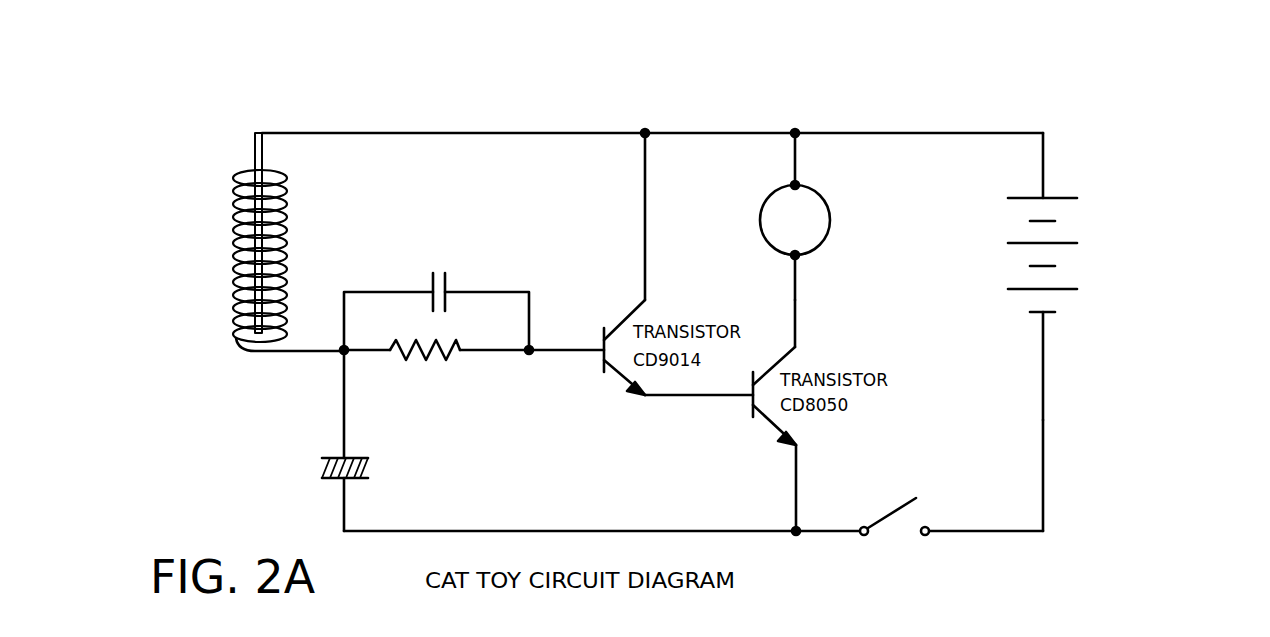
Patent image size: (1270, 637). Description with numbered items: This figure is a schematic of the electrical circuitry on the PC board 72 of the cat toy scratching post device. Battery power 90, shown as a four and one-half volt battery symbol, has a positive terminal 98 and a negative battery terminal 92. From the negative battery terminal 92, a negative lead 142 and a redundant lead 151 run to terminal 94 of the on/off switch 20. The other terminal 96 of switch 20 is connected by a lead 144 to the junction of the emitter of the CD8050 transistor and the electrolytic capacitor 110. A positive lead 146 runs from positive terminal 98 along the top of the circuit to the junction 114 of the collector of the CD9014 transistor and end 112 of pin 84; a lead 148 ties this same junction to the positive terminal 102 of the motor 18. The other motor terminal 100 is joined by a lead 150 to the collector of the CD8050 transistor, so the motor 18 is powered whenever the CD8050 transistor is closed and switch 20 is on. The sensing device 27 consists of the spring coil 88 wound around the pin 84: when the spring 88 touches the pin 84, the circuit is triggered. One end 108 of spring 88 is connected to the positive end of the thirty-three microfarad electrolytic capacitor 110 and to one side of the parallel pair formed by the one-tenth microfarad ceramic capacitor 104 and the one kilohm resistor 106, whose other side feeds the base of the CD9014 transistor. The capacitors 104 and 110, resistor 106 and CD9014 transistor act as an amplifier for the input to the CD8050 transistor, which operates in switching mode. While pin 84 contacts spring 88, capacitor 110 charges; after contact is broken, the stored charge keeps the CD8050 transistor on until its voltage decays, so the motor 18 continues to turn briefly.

The PC board 72 is at (214, 66).
The end of pin 112 is at (276, 213).
The pin 84 is at (263, 143).
The device 27 is at (240, 256).
The spring 88 is at (288, 223).
The end of spring 108 is at (262, 352).
The ceramic capacitor 104 is at (447, 300).
The resistor 106 is at (455, 352).
The electrolytic capacitor 110 is at (368, 470).
The lead 148 is at (670, 133).
The junction 114 is at (727, 133).
The positive lead 146 is at (927, 133).
The positive terminal of motor 102 is at (798, 184).
The motor 18 is at (822, 216).
The terminal of motor 100 is at (798, 257).
The lead 150 is at (797, 326).
The positive terminal 98 is at (1043, 198).
The battery power 90 is at (1070, 212).
The negative battery terminal 92 is at (1043, 312).
The negative lead 142 is at (1055, 475).
The lead 151 is at (1043, 471).
The lead 144 is at (822, 530).
The terminal of switch 96 is at (864, 526).
The terminal of switch 94 is at (928, 525).
The switch 20 is at (913, 528).